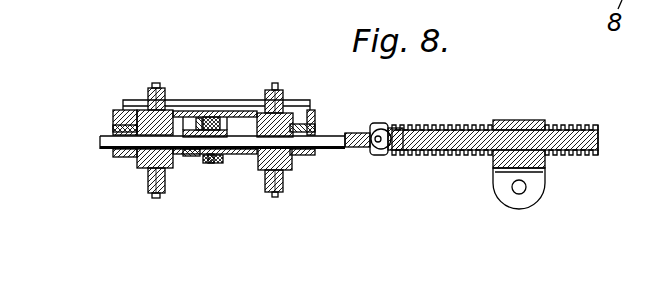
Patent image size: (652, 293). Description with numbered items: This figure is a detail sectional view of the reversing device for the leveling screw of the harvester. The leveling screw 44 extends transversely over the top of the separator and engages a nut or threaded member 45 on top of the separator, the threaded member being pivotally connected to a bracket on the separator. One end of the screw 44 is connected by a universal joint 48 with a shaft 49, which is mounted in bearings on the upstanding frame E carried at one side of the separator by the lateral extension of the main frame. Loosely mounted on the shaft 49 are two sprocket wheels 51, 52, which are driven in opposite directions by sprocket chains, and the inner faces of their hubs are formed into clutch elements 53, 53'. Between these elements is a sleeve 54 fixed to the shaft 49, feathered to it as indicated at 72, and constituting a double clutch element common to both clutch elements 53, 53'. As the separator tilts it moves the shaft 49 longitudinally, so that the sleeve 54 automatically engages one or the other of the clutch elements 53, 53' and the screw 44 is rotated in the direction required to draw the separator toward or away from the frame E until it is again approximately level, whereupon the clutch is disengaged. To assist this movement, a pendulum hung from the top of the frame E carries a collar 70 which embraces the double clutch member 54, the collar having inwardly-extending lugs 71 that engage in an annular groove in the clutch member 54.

The screw 44 is at (592, 127).
The nut or threaded member 45 is at (517, 120).
The universal joint 48 is at (387, 155).
The shaft 49 is at (104, 137).
The sprocket wheel 51 is at (278, 95).
The sprocket wheel 52 is at (152, 90).
The clutch element 53 is at (215, 160).
The clutch element 53' is at (214, 110).
The sleeve 54 is at (237, 116).
The collar 70 is at (222, 161).
The inwardly-extending lugs 71 is at (207, 113).
The feather 72 is at (195, 156).
The upstanding frame E is at (320, 156).